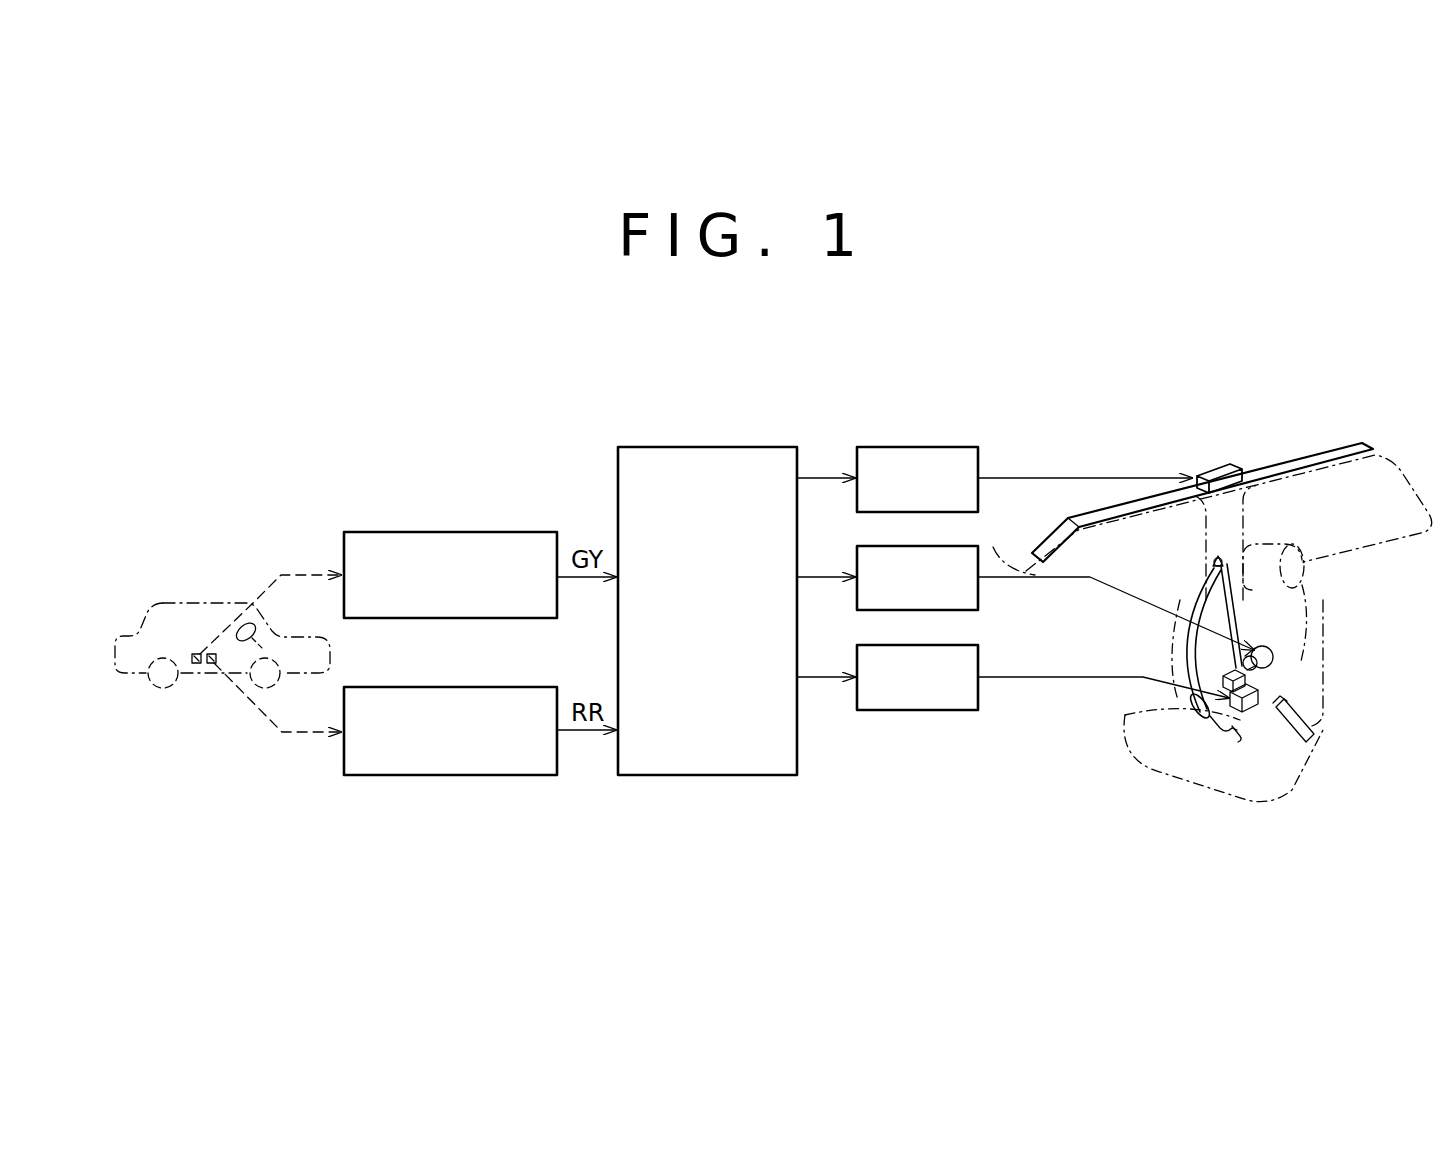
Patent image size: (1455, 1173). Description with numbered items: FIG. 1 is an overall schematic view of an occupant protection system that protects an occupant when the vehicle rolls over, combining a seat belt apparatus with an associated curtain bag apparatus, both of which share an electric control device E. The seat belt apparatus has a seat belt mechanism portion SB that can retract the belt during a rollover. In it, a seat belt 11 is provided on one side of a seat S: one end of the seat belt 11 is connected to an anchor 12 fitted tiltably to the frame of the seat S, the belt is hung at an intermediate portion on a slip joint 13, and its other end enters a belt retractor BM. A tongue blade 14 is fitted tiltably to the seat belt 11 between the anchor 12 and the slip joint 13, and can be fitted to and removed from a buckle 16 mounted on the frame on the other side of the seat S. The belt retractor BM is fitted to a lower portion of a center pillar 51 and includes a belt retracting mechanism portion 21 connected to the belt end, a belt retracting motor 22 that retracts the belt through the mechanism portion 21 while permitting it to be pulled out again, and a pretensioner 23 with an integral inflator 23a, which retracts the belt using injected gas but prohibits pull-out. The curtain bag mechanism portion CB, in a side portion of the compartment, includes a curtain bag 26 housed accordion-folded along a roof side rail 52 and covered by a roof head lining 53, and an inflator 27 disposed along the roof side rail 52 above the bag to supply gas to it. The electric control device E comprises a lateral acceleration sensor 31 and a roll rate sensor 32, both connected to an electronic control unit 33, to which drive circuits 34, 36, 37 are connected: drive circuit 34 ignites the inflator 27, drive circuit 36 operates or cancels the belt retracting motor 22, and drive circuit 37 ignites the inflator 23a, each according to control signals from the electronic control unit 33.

The seat belt 11 is at (1217, 727).
The anchor 12 is at (1210, 717).
The slip joint 13 is at (1212, 561).
The tongue blade 14 is at (1240, 738).
The buckle 16 is at (1284, 750).
The belt retracting mechanism portion 21 is at (1222, 686).
The belt retracting motor 22 is at (1327, 593).
The pretensioner 23 is at (1260, 687).
The inflator 23a is at (1278, 697).
The curtain bag 26 is at (1285, 460).
The inflator 27 is at (1218, 467).
The lateral acceleration sensor 31 is at (526, 516).
The roll rate sensor 32 is at (526, 671).
The electronic control unit 33 is at (750, 446).
The drive circuit 34 is at (945, 433).
The drive circuit 36 is at (945, 532).
The drive circuit 37 is at (945, 631).
The center pillar 51 is at (1243, 508).
The roof side rail 52 is at (1307, 473).
The roof head lining 53 is at (1404, 425).
The curtain bag mechanism portion CB is at (1330, 450).
The belt retractor BM is at (1273, 672).
The seat belt mechanism portion SB is at (1164, 695).
The seat S is at (1120, 733).
The electric control device E is at (660, 790).